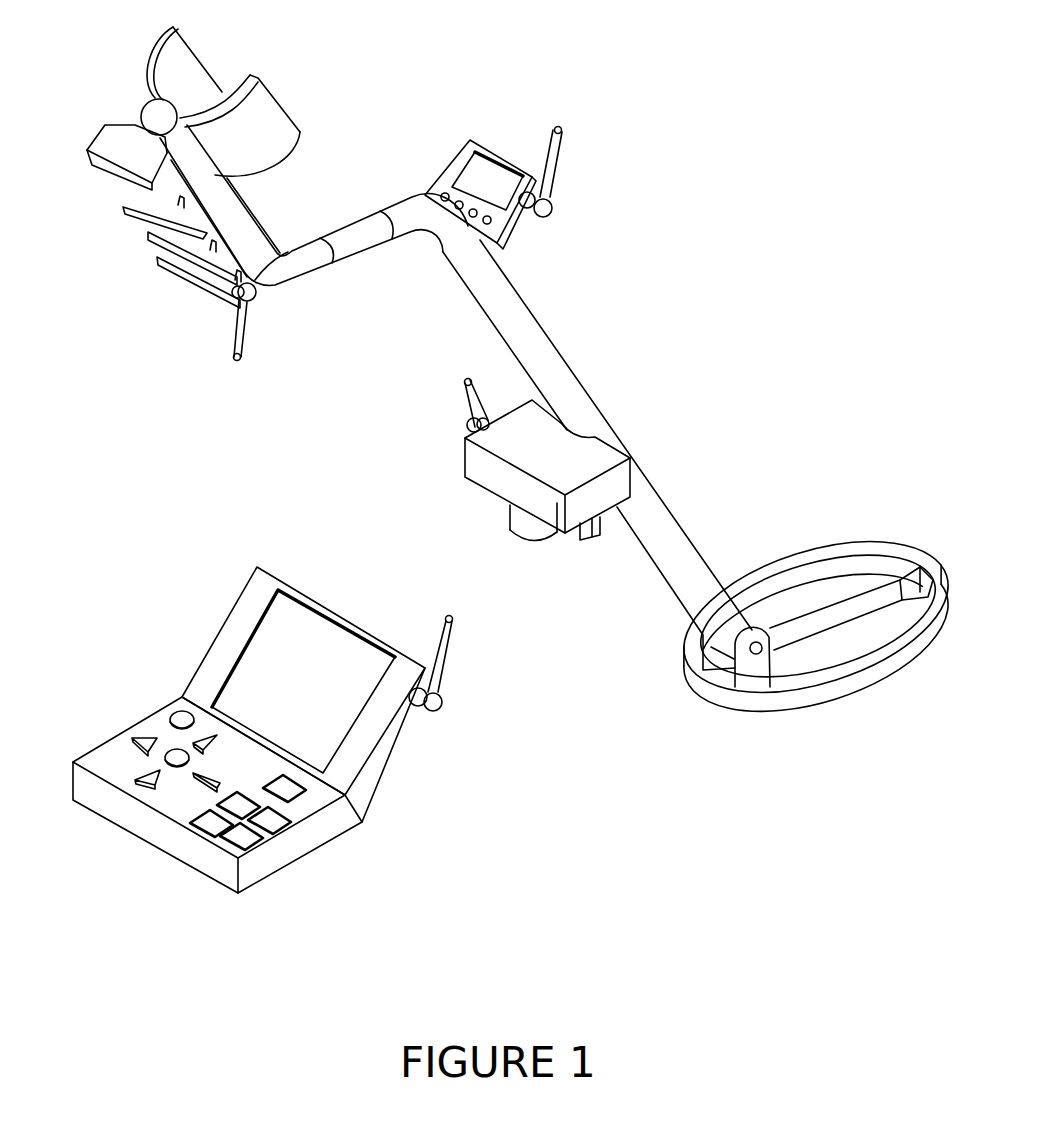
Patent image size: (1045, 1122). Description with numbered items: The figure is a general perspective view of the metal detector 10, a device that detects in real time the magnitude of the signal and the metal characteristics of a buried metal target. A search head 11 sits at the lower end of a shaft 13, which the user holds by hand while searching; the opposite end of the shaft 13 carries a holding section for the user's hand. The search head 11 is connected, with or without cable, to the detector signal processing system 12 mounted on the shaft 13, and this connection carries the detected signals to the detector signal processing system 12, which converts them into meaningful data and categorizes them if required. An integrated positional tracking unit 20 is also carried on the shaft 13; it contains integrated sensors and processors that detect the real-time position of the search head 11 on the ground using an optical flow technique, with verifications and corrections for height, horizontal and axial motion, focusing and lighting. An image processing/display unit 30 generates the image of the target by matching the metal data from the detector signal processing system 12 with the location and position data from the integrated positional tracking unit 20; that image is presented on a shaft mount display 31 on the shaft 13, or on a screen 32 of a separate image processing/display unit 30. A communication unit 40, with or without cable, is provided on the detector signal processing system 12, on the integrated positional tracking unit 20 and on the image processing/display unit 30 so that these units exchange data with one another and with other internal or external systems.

The metal detector 10 is at (763, 137).
The search head 11 is at (840, 700).
The detector signal processing system 12 is at (158, 243).
The shaft 13 is at (557, 343).
The integrated positional tracking unit 20 is at (497, 472).
The image processing/display unit 30 is at (500, 150).
The shaft mount display 31 is at (482, 187).
The screen 32 is at (293, 663).
The communication unit 40 is at (558, 185).